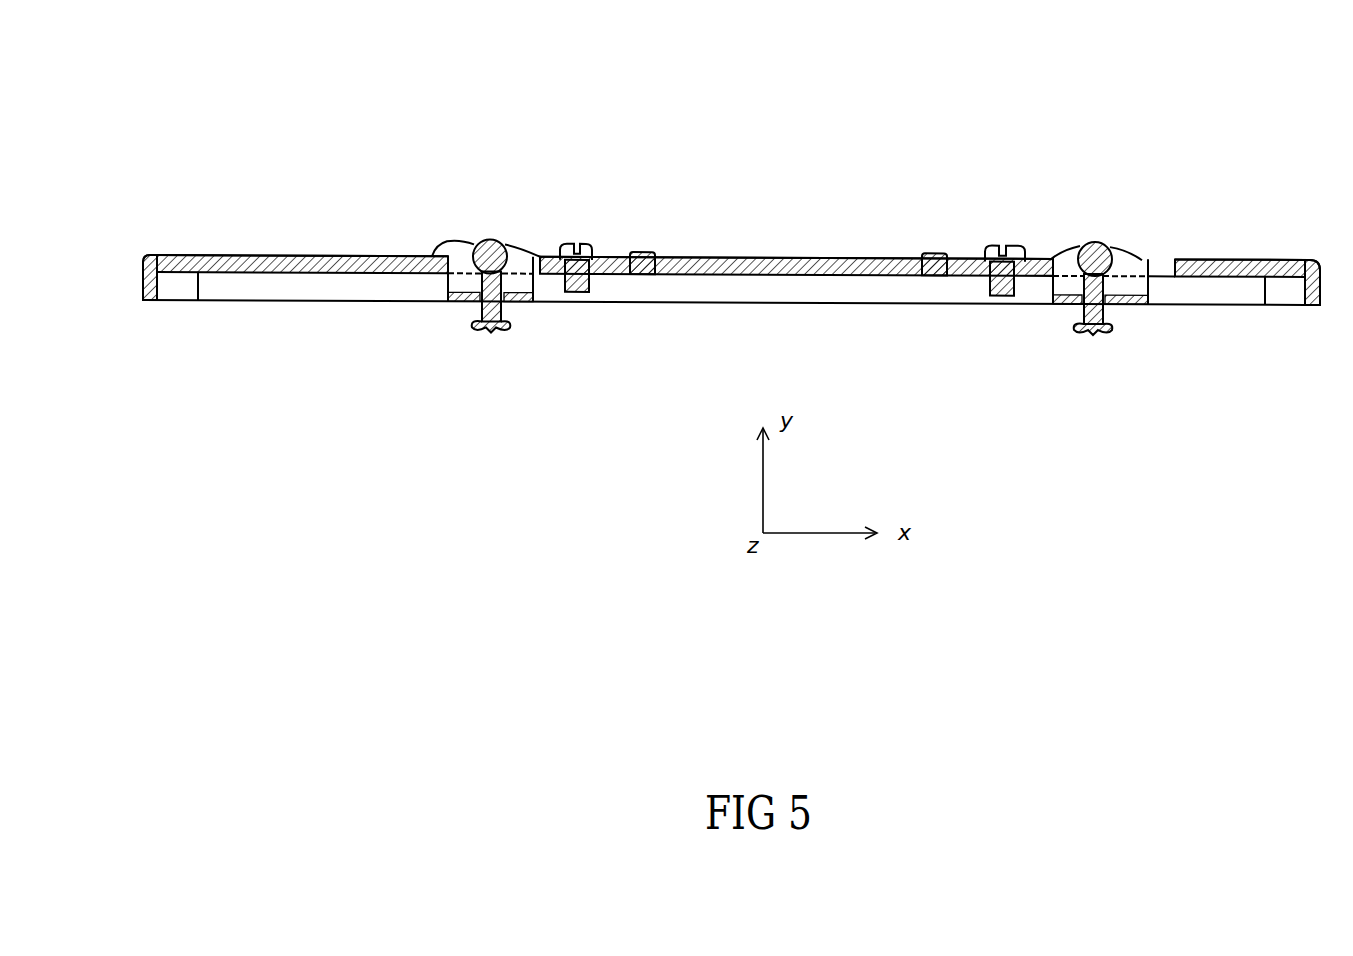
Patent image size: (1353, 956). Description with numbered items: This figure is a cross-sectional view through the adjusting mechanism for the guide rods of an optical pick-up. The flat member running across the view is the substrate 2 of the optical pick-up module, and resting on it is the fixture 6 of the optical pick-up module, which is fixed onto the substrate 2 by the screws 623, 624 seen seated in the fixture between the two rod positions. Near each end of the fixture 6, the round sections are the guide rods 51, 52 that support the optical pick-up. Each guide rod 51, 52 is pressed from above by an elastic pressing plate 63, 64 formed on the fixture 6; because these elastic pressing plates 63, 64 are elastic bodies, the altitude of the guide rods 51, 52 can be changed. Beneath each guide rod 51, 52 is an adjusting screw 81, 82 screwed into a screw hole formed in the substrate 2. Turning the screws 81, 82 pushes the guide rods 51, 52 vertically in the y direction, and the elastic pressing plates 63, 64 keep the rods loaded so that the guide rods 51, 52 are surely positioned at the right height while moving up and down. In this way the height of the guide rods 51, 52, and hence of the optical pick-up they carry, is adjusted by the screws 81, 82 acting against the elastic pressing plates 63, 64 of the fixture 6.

The substrate of the optical pick-up module 2 is at (213, 263).
The fixture of the optical pick-up module 6 is at (781, 256).
The guide rod 51 is at (479, 240).
The guide rod 52 is at (1128, 251).
The elastic pressing plate 63 is at (498, 240).
The elastic pressing plate 64 is at (1100, 240).
The screw 623 is at (578, 243).
The screw 624 is at (1003, 250).
The adjusting screw 81 is at (1092, 334).
The adjusting screw 82 is at (490, 328).